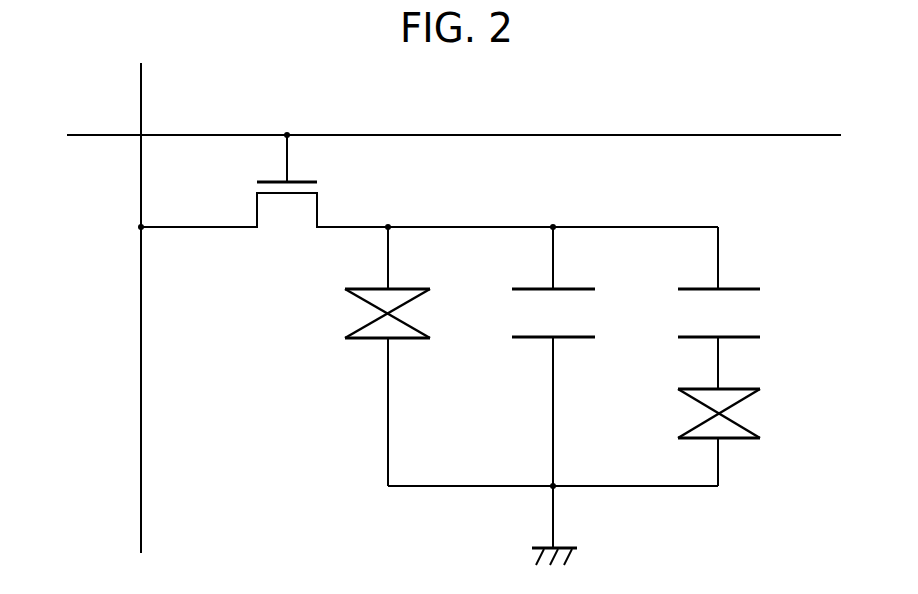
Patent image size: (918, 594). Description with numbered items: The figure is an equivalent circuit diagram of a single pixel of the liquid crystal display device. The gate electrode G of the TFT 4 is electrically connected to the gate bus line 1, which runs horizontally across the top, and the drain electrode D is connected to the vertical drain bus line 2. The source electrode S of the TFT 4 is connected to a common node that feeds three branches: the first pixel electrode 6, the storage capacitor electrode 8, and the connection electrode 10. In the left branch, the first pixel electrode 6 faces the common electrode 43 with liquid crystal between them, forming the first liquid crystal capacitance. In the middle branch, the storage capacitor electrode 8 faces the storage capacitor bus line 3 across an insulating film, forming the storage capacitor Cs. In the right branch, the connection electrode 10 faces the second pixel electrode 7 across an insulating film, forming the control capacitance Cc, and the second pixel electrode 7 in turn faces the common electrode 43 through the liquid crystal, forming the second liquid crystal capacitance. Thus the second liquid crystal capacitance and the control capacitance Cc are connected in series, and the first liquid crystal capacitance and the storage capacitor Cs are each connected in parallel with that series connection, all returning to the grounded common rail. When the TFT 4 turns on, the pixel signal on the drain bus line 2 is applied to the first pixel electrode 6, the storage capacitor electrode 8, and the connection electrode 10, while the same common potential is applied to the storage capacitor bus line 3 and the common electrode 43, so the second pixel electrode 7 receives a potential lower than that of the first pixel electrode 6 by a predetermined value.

The gate bus line 1 is at (104, 133).
The drain bus line 2 is at (141, 91).
The storage capacitor bus line 3 is at (522, 337).
The TFT 4 is at (338, 183).
The first pixel electrode 6 is at (361, 289).
The second pixel electrode 7 is at (752, 337).
The storage capacitor electrode 8 is at (522, 289).
The connection electrode 10 is at (741, 289).
The common electrode 43 is at (361, 338).